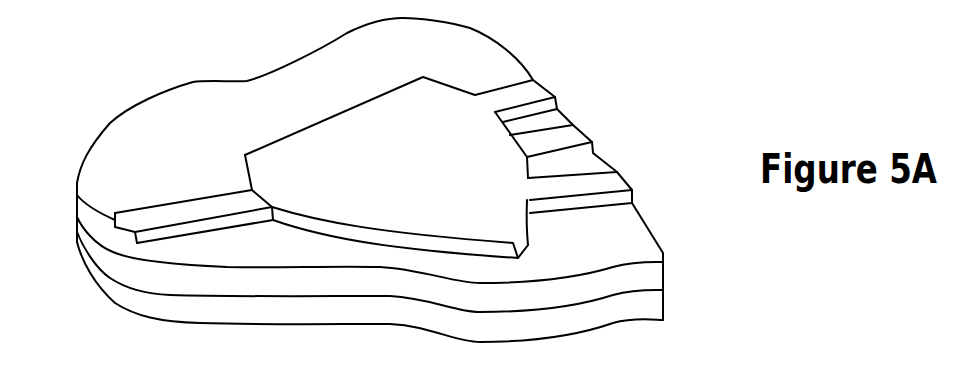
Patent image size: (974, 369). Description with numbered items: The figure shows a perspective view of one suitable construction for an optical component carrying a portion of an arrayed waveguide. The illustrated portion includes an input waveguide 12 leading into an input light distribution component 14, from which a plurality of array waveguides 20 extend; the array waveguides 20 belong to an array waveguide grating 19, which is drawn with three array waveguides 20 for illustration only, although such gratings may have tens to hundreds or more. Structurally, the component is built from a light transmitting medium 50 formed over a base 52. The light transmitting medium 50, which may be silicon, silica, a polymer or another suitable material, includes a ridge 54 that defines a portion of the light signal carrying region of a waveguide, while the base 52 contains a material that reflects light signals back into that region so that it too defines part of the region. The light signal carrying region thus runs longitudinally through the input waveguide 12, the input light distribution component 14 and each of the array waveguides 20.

The input waveguide 12 is at (157, 205).
The input light distribution component 14 is at (293, 133).
The array waveguide grating 19 is at (658, 250).
The array waveguides 20 is at (507, 82).
The light transmitting medium 50 is at (152, 262).
The base 52 is at (173, 300).
The ridge 54 is at (223, 203).